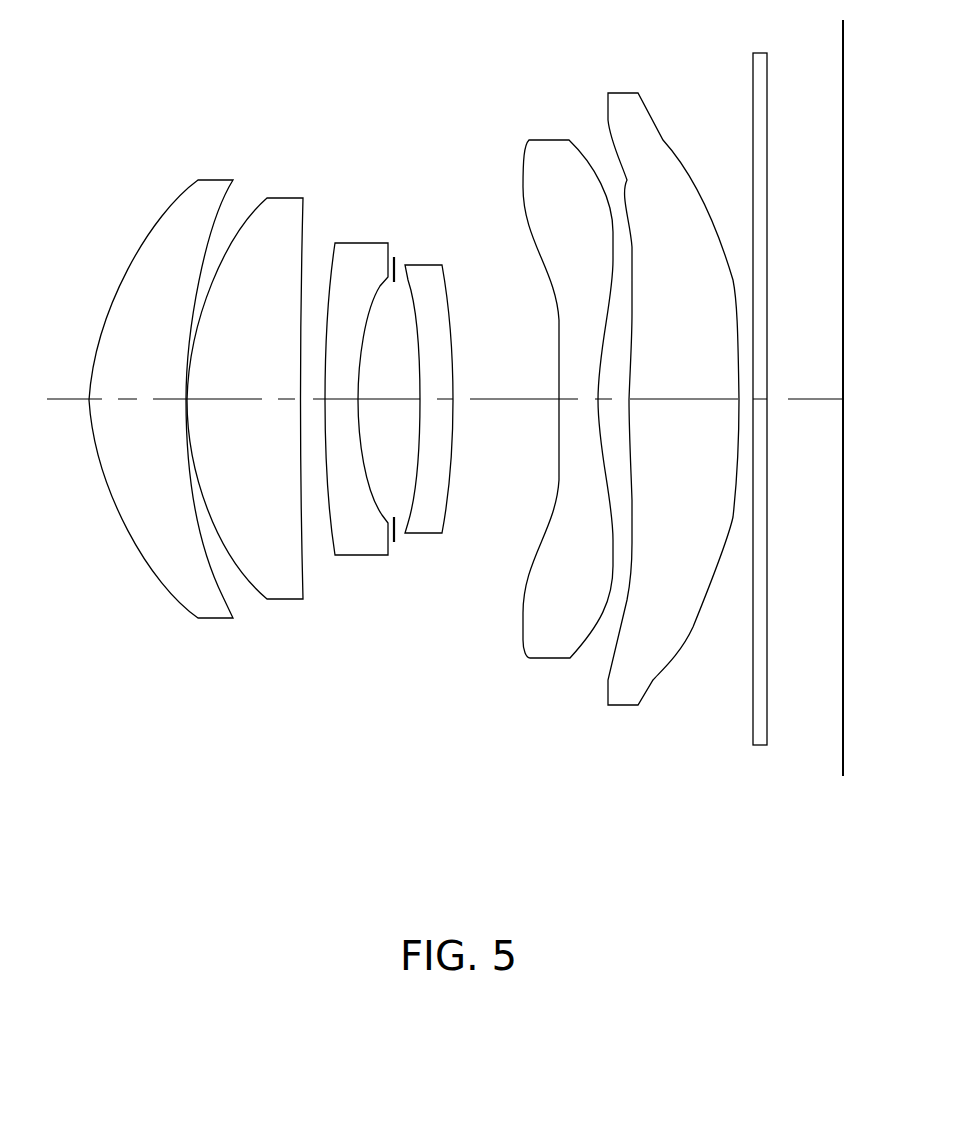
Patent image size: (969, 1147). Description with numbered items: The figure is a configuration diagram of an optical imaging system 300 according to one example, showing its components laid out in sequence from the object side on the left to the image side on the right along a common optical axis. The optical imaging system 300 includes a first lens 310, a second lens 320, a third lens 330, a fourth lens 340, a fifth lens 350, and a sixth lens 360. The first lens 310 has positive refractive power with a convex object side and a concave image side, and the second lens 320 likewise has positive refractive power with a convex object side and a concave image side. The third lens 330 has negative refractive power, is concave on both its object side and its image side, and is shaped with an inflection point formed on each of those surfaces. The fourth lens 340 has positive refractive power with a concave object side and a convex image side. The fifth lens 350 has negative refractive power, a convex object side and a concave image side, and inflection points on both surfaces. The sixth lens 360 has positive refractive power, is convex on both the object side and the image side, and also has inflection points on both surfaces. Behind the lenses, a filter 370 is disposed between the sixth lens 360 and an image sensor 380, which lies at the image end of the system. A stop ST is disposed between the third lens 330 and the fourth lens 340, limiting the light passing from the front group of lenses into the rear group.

The optical imaging system 300 is at (392, 138).
The first lens 310 is at (213, 620).
The second lens 320 is at (282, 600).
The third lens 330 is at (362, 557).
The fourth lens 340 is at (420, 535).
The fifth lens 350 is at (548, 660).
The sixth lens 360 is at (622, 707).
The filter 370 is at (760, 746).
The image sensor 380 is at (843, 750).
The stop ST is at (398, 280).